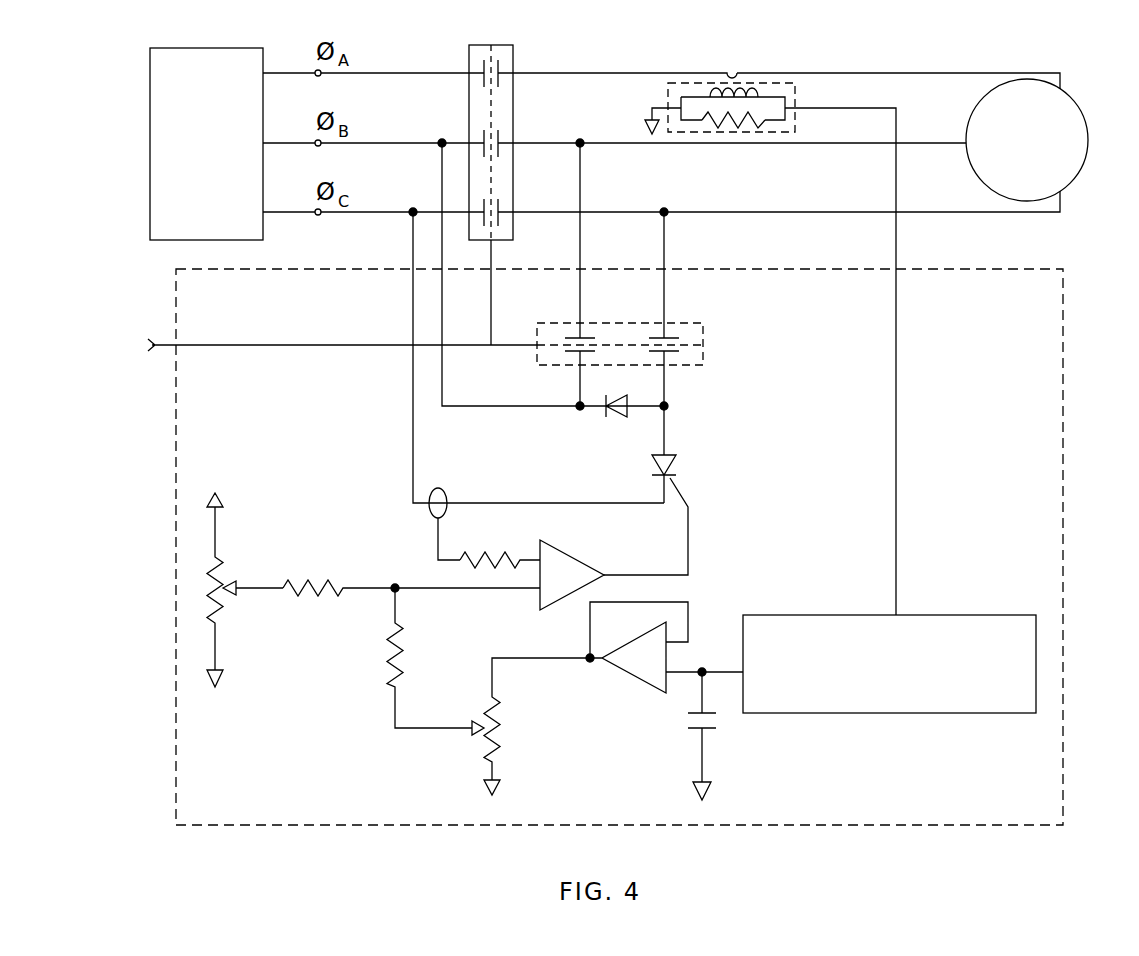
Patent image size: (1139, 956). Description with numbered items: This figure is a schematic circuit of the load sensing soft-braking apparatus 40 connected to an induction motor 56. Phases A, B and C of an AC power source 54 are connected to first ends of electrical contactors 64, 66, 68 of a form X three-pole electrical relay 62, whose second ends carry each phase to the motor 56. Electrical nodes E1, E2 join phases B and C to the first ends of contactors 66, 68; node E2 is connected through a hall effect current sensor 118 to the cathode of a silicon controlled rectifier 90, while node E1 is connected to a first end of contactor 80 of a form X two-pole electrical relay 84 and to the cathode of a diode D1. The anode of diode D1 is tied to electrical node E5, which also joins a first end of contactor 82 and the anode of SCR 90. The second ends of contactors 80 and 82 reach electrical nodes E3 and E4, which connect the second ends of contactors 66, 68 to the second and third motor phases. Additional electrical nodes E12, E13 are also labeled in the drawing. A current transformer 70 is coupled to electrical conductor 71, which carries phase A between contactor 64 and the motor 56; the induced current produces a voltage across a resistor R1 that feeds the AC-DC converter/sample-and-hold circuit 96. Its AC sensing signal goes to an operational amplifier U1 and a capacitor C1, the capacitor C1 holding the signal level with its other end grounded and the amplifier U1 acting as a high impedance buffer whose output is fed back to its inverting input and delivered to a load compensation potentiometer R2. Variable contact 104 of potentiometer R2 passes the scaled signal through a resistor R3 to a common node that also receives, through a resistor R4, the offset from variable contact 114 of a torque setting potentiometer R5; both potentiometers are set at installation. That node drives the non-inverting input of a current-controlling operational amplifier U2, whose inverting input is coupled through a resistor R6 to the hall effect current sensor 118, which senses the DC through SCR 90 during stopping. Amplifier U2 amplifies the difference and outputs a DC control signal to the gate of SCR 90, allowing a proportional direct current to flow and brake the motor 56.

The AC power source 54 is at (150, 130).
The motor 56 is at (1082, 118).
The form X three-pole electrical relay 62 is at (482, 45).
The electrical contactor 64 is at (498, 70).
The electrical contactor 66 is at (498, 138).
The electrical contactor 68 is at (498, 207).
The current transformer 70 is at (800, 81).
The electrical conductor 71 is at (734, 74).
The resistor R1 is at (738, 126).
The electrical node E1 is at (440, 139).
The electrical node E2 is at (412, 209).
The electrical node E3 is at (580, 140).
The electrical node E4 is at (662, 211).
The electrical node E5 is at (664, 408).
The node E12 is at (702, 668).
The node E13 is at (491, 345).
The contactor 80 is at (580, 338).
The contactor 82 is at (664, 338).
The form X two-pole electrical relay 84 is at (703, 345).
The diode D1 is at (616, 418).
The silicon controlled rectifier 90 is at (676, 467).
The hall effect current sensor 118 is at (440, 487).
The resistor R6 is at (480, 553).
The current-controlling operational amplifier U2 is at (588, 561).
The torque setting potentiometer R5 is at (222, 566).
The variable contact 114 is at (228, 592).
The resistor R4 is at (314, 586).
The resistor R3 is at (394, 662).
The variable contact 104 is at (472, 734).
The load compensation potentiometer R2 is at (496, 755).
The operational amplifier U1 is at (620, 664).
The capacitor C1 is at (712, 730).
The AC-DC converter/sample-and-hold circuit 96 is at (958, 615).
The soft-braking apparatus 40 is at (1063, 447).